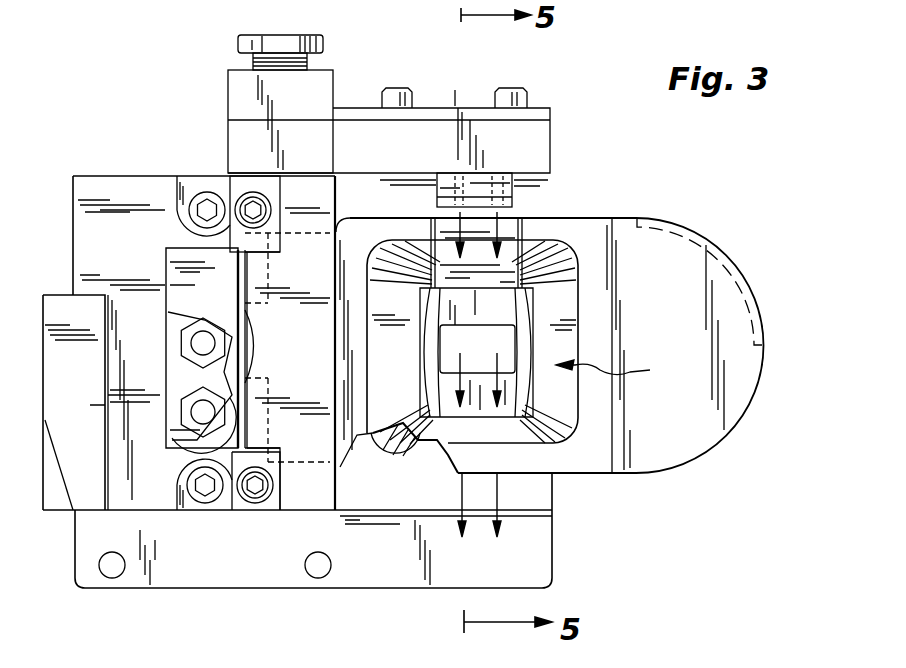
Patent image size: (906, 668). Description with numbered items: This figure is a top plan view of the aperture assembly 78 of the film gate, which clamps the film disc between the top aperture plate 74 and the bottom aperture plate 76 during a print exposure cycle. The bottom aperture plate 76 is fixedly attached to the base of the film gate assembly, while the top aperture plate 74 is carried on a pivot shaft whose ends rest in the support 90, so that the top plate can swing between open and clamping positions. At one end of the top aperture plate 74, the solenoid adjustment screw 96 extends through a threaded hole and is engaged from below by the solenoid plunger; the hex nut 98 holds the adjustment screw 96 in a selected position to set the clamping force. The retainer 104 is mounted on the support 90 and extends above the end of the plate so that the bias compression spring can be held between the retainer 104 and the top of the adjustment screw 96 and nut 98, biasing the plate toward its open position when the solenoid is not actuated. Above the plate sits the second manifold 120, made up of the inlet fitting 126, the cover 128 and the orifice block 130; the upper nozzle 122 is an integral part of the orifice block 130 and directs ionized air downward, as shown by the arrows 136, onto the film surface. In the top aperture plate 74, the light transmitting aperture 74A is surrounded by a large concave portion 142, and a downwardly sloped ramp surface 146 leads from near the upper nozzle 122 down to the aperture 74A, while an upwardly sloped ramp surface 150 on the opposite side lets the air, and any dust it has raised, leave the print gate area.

The top aperture plate 74 is at (550, 345).
The light transmitting aperture 74A is at (440, 363).
The bottom aperture plate 76 is at (410, 503).
The aperture assembly 78 is at (698, 242).
The support 90 is at (313, 358).
The solenoid adjustment screw 96 is at (200, 345).
The hex nut 98 is at (180, 335).
The retainer 104 is at (205, 301).
The second manifold 120 is at (442, 99).
The upper nozzle 122 is at (512, 195).
The inlet fitting 126 is at (323, 38).
The cover 128 is at (333, 77).
The orifice block 130 is at (540, 135).
The arrows 136 is at (460, 227).
The large concave portion 142 is at (619, 371).
The downwardly sloped ramp surface 146 is at (510, 257).
The upwardly sloped ramp surface 150 is at (523, 440).